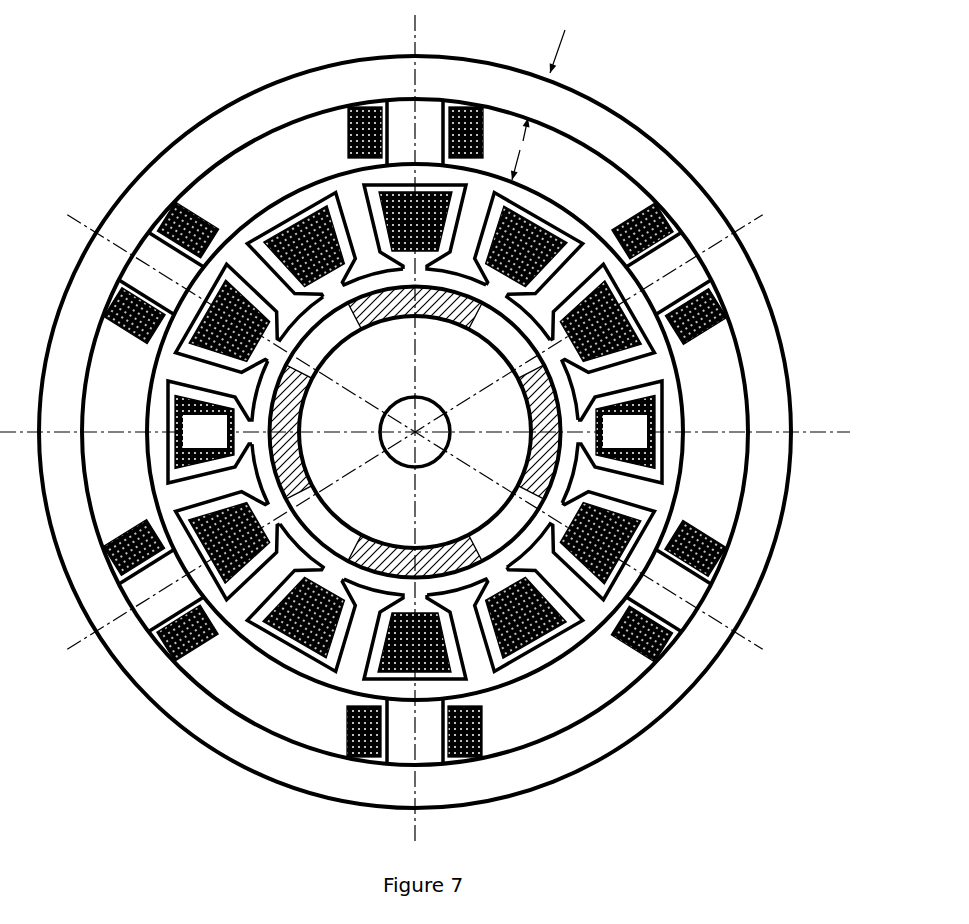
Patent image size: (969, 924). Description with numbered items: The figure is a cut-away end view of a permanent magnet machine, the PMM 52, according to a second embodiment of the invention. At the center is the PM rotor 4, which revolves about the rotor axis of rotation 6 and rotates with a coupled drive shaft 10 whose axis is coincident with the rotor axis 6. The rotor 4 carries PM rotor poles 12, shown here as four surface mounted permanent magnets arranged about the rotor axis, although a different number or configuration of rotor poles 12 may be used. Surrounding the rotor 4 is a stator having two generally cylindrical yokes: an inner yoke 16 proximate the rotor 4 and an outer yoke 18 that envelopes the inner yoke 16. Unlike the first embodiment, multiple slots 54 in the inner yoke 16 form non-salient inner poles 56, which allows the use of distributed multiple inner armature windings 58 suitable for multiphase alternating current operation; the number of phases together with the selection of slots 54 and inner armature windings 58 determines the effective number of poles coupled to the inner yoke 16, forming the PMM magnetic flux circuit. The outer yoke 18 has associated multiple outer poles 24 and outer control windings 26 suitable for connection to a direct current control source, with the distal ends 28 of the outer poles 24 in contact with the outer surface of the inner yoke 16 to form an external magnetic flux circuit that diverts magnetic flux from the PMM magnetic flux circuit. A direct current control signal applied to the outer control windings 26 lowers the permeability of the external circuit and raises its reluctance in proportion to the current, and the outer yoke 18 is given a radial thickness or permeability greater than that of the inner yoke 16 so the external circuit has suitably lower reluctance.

The PM rotor 4 is at (466, 369).
The rotor axis of rotation 6 is at (420, 433).
The drive shaft 10 is at (403, 467).
The PM rotor poles 12 is at (427, 317).
The inner yoke 16 is at (670, 508).
The outer yoke 18 is at (777, 508).
The outer poles 24 is at (410, 141).
The outer control windings 26 is at (348, 121).
The distal ends 28 is at (158, 623).
The PMM 52 is at (425, 430).
The slots 54 is at (168, 408).
The non-salient inner poles 56 is at (253, 397).
The inner armature windings 58 is at (217, 442).